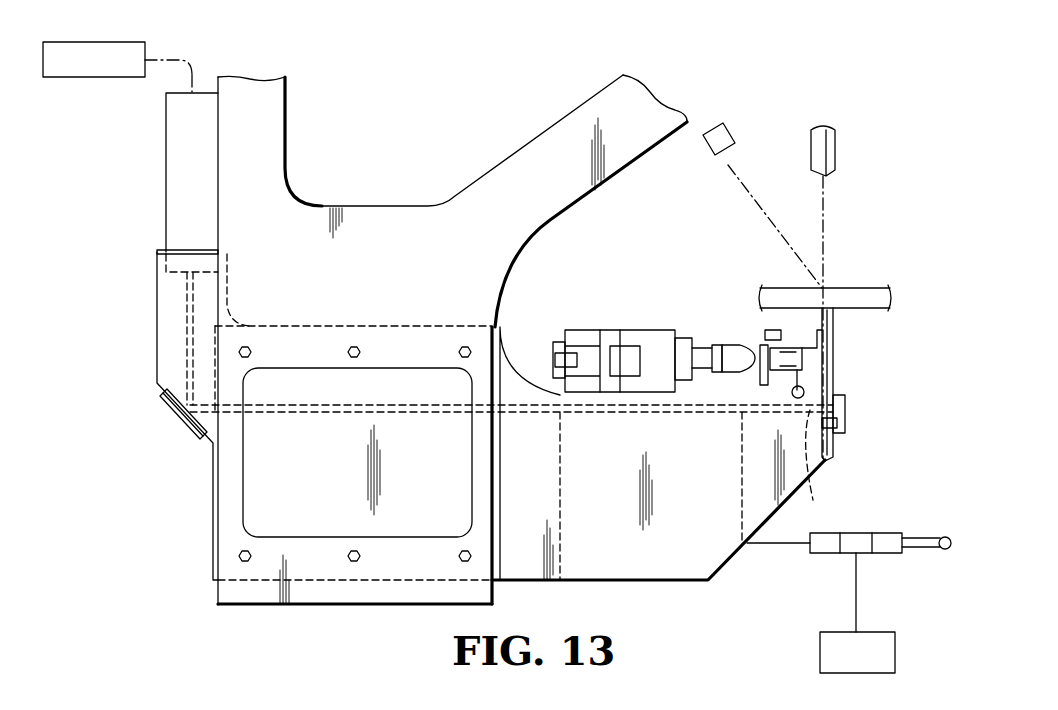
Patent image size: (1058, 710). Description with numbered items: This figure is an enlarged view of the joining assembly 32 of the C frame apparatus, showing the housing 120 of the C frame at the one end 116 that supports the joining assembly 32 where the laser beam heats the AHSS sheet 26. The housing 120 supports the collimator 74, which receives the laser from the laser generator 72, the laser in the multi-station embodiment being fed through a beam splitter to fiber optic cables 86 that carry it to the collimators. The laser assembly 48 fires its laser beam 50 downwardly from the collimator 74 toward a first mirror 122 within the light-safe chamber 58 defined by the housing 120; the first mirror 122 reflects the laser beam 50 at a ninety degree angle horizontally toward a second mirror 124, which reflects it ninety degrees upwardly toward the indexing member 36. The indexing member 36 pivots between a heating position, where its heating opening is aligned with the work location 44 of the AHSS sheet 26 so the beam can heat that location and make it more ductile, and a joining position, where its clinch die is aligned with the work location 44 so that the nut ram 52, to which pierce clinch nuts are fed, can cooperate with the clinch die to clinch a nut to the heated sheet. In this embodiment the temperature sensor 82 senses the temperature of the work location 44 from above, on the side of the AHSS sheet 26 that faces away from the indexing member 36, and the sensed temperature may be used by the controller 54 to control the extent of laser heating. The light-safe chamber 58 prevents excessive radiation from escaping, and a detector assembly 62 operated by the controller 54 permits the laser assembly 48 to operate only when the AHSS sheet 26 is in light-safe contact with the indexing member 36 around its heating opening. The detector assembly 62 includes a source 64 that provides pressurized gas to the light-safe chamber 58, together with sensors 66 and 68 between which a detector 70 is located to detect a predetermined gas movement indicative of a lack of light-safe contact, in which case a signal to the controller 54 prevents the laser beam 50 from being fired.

The AHSS sheet 26 is at (780, 288).
The joining assembly 32 is at (873, 362).
The indexing member 36 is at (833, 357).
The work location 44 is at (832, 288).
The laser assembly 48 is at (173, 422).
The laser beam 50 is at (192, 303).
The nut ram 52 is at (850, 153).
The controller 54 is at (857, 613).
The light-safe chamber 58 is at (190, 336).
The detector assembly 62 is at (780, 570).
The source 64 is at (950, 538).
The sensor 66 is at (883, 555).
The sensor 68 is at (823, 555).
The detector 70 is at (855, 532).
The laser generator 72 is at (117, 59).
The collimator 74 is at (190, 157).
The temperature sensor 82 is at (727, 140).
The fiber optic cables 86 is at (192, 75).
The one end 116 is at (825, 472).
The housing 120 is at (240, 220).
The first mirror 122 is at (183, 437).
The second mirror 124 is at (807, 470).